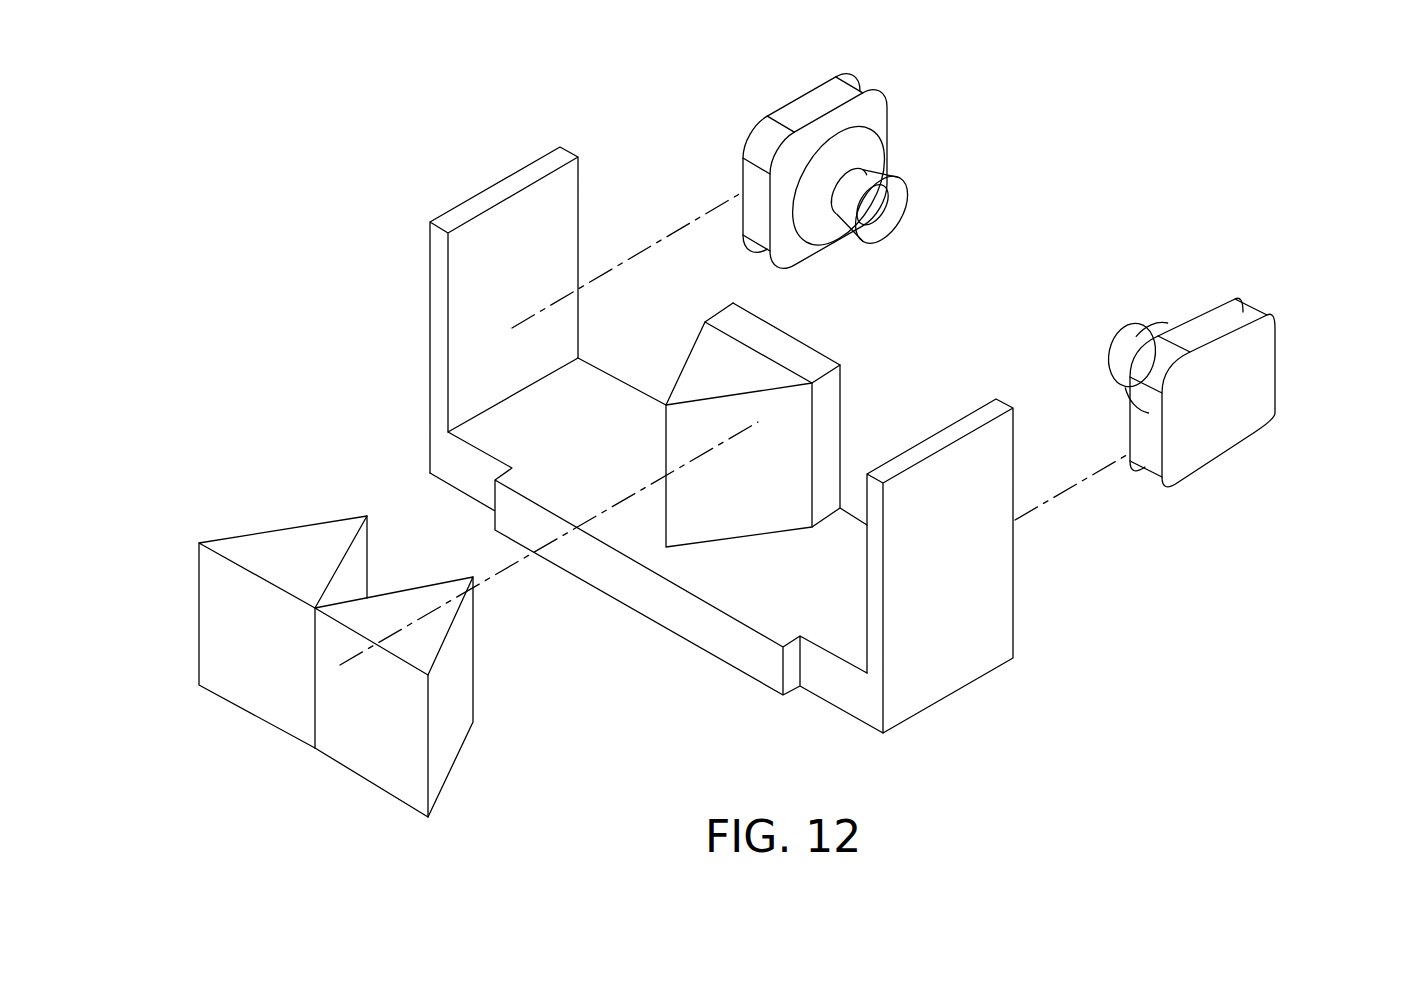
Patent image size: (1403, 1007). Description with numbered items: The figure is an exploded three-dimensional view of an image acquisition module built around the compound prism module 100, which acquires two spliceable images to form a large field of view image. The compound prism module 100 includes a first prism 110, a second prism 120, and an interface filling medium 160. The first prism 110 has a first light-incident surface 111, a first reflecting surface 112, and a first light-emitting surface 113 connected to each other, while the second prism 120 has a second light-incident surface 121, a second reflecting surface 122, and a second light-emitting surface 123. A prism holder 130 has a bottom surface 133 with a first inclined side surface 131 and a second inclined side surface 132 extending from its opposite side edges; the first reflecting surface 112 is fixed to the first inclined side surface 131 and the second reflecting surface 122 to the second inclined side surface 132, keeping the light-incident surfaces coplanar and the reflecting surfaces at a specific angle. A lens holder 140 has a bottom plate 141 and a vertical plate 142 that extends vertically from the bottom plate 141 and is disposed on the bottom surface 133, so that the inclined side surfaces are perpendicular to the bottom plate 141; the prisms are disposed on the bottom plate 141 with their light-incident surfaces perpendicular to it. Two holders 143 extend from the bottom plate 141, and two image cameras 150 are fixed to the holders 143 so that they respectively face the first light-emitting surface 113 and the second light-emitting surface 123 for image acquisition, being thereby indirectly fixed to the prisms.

The compound prism module 100 is at (393, 328).
The first prism 110 is at (430, 640).
The first light-incident surface 111 is at (370, 725).
The first reflecting surface 112 is at (415, 583).
The first light-emitting surface 113 is at (450, 712).
The second prism 120 is at (267, 543).
The second light-incident surface 121 is at (247, 672).
The second reflecting surface 122 is at (352, 568).
The second light-emitting surface 123 is at (281, 523).
The prism holder 130 is at (728, 363).
The first inclined side surface 131 is at (748, 485).
The second inclined side surface 132 is at (677, 372).
The bottom surface 133 is at (758, 348).
The lens holder 140 is at (862, 380).
The bottom plate 141 is at (793, 618).
The vertical plate 142 is at (827, 422).
The holder 143 is at (488, 237).
The image camera 150 is at (803, 103).
The interface filling medium 160 is at (313, 708).